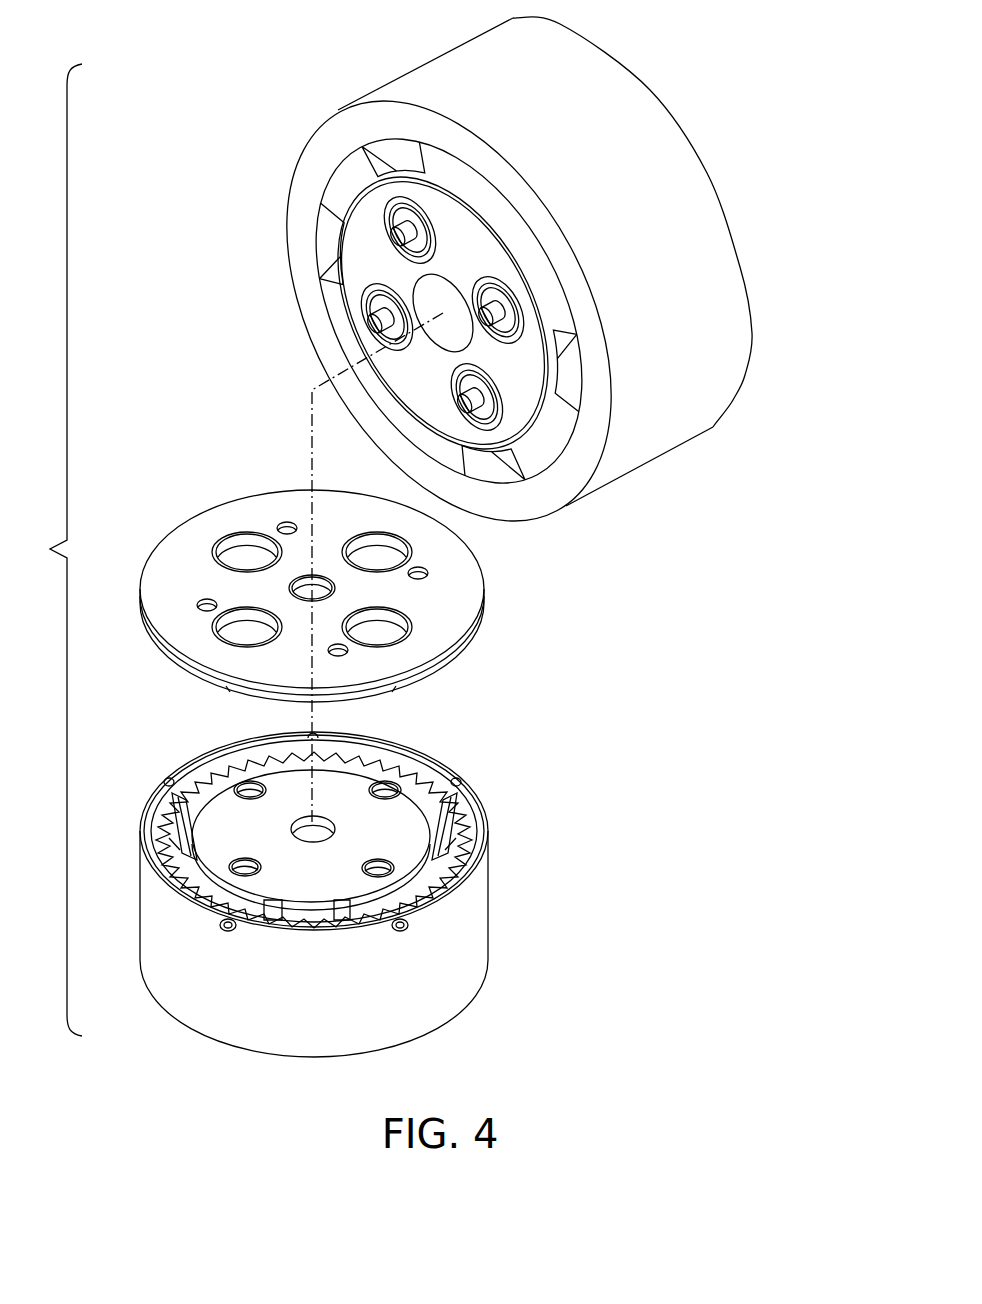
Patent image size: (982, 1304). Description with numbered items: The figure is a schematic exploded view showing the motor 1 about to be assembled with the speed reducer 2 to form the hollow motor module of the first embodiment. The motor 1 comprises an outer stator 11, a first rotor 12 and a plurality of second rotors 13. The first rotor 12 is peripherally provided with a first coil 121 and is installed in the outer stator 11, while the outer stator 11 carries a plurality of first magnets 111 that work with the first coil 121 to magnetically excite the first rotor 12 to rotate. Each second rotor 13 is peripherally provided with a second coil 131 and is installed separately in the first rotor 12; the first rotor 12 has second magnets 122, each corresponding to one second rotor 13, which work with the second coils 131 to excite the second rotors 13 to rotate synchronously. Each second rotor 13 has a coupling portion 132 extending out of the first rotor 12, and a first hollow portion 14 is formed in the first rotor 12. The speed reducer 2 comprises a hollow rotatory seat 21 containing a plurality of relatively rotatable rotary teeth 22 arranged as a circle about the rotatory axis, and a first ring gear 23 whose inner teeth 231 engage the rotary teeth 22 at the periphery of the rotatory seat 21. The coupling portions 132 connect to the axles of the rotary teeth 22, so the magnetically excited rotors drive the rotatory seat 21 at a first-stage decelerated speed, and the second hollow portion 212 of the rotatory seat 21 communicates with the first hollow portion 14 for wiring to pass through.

The motor 1 is at (686, 79).
The outer stator 11 is at (643, 456).
The first magnets 111 is at (348, 166).
The first rotor 12 is at (362, 207).
The first coil 121 is at (338, 266).
The second magnets 122 is at (385, 308).
The second rotors 13 is at (472, 374).
The second coil 131 is at (490, 373).
The coupling portion 132 is at (463, 412).
The first hollow portion 14 is at (447, 307).
The speed reducer 2 is at (475, 910).
The rotatory seat 21 is at (467, 797).
The second hollow portion 212 is at (307, 832).
The rotary teeth 22 is at (412, 800).
The first ring gear 23 is at (468, 815).
The inner teeth 231 is at (482, 842).